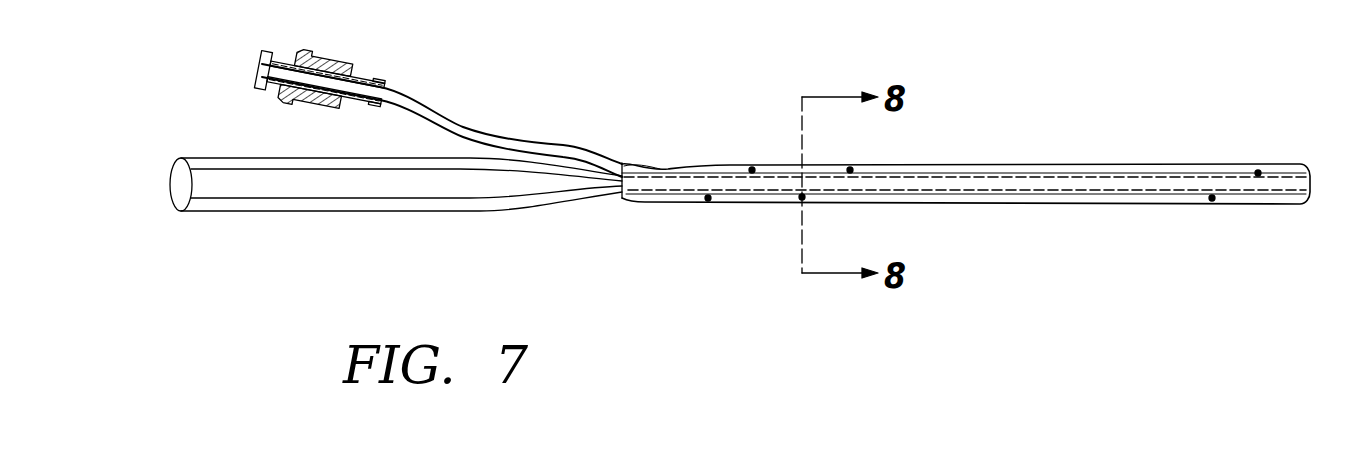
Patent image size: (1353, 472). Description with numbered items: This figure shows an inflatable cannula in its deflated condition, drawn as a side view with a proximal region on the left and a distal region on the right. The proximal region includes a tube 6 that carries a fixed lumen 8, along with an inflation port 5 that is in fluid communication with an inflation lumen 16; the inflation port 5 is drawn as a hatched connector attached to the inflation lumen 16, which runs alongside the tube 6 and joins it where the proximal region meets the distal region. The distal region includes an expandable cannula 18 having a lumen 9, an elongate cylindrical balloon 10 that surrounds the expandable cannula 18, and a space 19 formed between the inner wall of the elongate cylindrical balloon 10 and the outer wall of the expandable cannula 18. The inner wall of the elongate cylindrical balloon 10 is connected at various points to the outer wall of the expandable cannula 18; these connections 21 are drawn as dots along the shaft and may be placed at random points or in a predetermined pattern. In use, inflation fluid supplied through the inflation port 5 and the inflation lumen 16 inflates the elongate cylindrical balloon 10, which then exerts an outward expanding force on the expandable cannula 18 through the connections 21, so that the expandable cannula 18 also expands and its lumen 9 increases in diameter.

The inflation port 5 is at (330, 60).
The tube 6 is at (387, 131).
The fixed lumen 8 is at (478, 182).
The lumen 9 is at (1063, 183).
The elongate cylindrical balloon 10 is at (1113, 165).
The inflation lumen 16 is at (550, 142).
The expandable cannula 18 is at (1012, 176).
The space 19 is at (639, 170).
The connections 21 is at (850, 168).